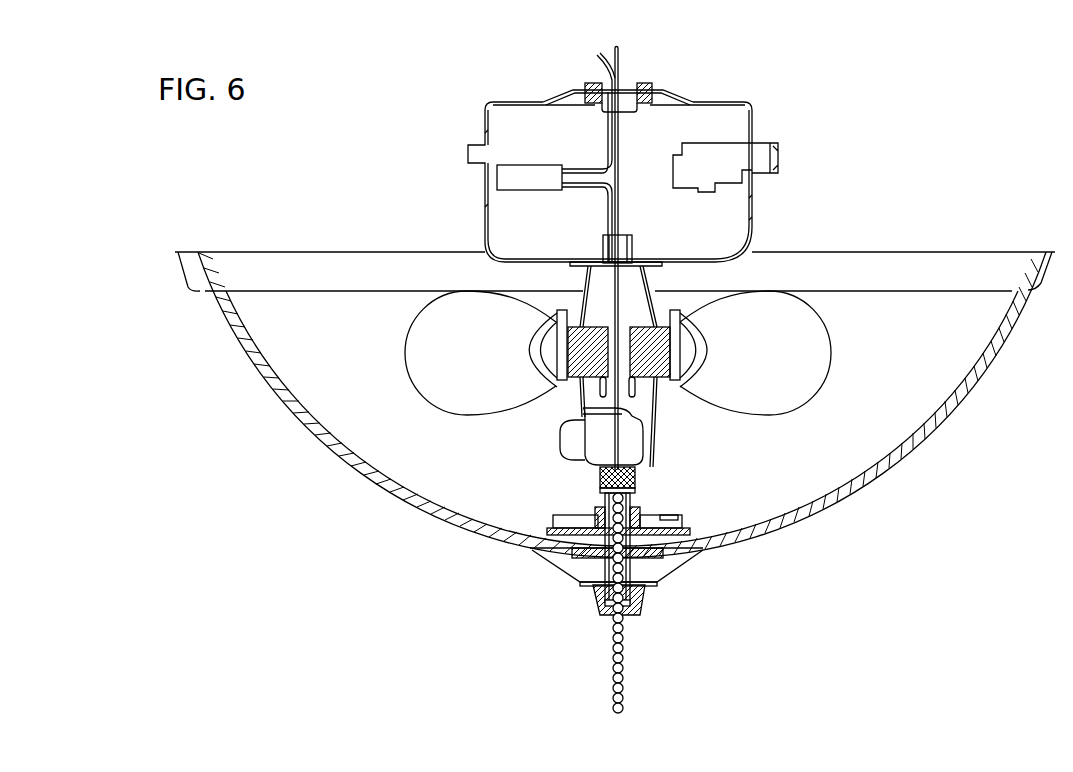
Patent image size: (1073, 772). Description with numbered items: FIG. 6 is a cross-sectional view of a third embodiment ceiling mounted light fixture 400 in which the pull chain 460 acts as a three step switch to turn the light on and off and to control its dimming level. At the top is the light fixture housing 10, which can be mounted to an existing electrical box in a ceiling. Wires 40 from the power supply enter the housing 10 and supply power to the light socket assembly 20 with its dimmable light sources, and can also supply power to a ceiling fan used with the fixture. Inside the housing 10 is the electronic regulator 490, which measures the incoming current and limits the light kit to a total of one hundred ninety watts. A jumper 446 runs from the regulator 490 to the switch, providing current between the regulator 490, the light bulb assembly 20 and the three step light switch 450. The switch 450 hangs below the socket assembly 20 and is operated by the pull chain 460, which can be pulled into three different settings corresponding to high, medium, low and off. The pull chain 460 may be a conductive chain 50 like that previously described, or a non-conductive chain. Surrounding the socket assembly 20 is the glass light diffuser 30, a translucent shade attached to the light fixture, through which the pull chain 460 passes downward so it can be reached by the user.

The pull chain as a three step switch embodiment 400 is at (350, 175).
The light fixture housing 10 is at (485, 240).
The wires from power supply and to ceiling fan 40 is at (613, 150).
The jumper to switch 446 is at (600, 212).
The electronic regulator 490 is at (527, 180).
The glass light diffuser 30 is at (355, 467).
The light socket assembly 20 is at (576, 395).
The three step light switch 450 is at (588, 455).
The pull chain 460 is at (673, 603).
The conductive pull chain 50 is at (620, 645).